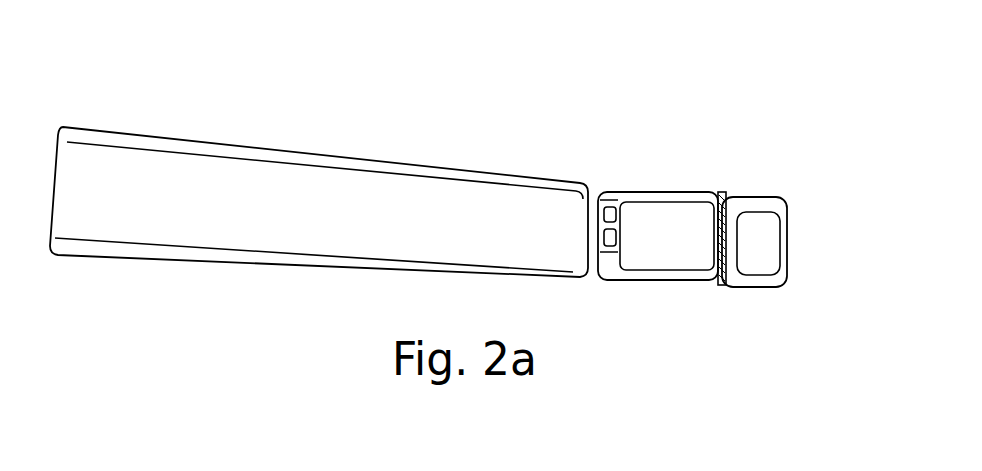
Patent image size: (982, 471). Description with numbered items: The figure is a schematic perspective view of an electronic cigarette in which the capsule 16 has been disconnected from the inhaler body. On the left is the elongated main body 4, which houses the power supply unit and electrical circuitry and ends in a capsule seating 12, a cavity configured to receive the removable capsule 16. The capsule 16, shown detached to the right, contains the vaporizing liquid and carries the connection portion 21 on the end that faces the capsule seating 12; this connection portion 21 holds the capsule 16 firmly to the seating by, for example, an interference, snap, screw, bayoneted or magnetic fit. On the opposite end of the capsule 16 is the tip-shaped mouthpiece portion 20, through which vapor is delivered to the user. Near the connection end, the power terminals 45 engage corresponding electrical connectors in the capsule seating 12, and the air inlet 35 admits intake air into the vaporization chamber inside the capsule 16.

The main body 4 is at (338, 138).
The capsule seating 12 is at (513, 243).
The capsule 16 is at (760, 174).
The mouthpiece portion 20 is at (760, 248).
The connection portion 21 is at (622, 168).
The air inlet 35 is at (622, 228).
The power terminals 45 is at (608, 215).